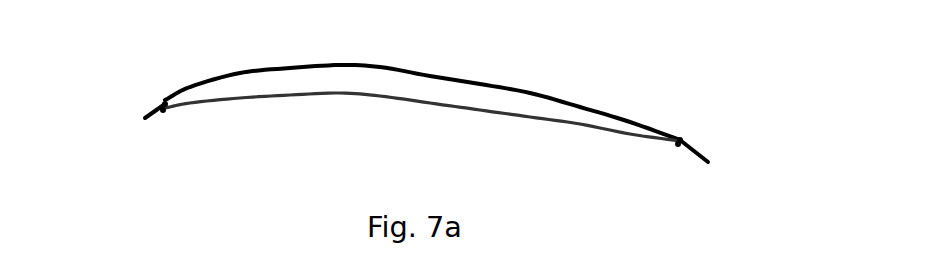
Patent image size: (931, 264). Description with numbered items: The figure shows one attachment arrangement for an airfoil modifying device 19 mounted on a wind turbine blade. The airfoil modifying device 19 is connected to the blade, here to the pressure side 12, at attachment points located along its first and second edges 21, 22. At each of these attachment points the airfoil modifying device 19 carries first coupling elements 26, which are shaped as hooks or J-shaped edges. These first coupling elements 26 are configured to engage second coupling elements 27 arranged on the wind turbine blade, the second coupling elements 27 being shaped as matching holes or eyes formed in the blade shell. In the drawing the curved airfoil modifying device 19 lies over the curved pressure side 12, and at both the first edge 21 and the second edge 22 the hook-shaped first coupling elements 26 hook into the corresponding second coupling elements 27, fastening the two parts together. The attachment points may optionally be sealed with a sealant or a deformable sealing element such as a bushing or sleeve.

The pressure side 12 is at (528, 92).
The airfoil modifying device 19 is at (383, 101).
The first edge 21 is at (151, 93).
The second edge 22 is at (688, 135).
The first coupling elements 26 is at (161, 101).
The second coupling elements 27 is at (168, 120).